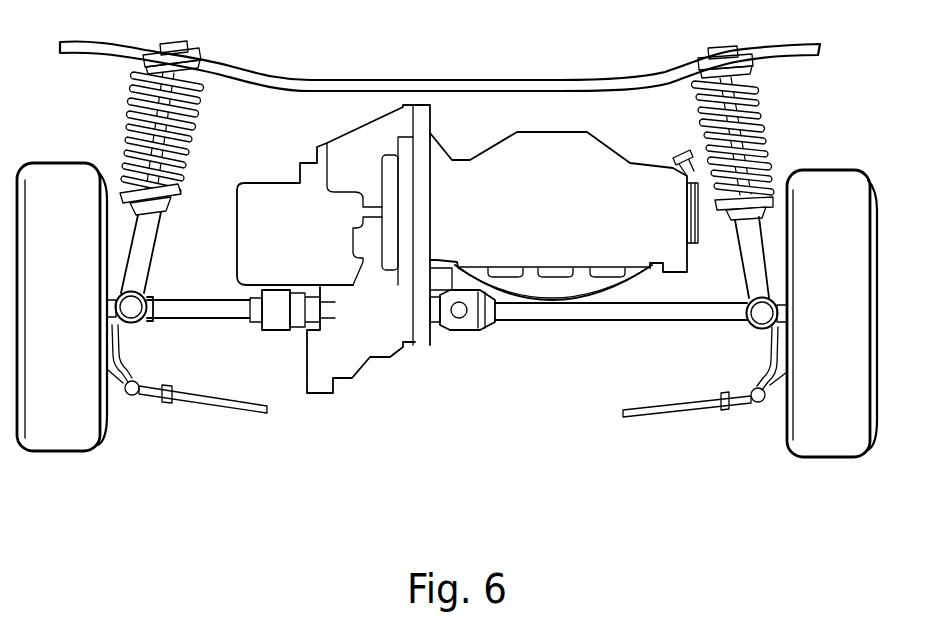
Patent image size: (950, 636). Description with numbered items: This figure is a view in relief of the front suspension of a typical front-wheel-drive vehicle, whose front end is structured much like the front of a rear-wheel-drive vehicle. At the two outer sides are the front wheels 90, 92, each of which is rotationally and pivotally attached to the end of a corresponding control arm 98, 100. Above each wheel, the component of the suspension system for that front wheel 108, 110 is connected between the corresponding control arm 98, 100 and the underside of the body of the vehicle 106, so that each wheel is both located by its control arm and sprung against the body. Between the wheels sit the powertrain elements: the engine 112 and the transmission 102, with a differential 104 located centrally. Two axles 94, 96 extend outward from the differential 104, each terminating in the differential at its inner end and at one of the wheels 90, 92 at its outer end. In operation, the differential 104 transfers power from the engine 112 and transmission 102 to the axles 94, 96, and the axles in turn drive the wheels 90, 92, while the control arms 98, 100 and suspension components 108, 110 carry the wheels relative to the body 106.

The front wheel 90 is at (78, 451).
The front wheel 92 is at (810, 458).
The axle 94 is at (193, 319).
The axle 96 is at (582, 322).
The control arm 98 is at (188, 405).
The control arm 100 is at (692, 412).
The transmission 102 is at (281, 190).
The differential 104 is at (393, 348).
The body of the vehicle 106 is at (428, 79).
The suspension system component 108 is at (203, 105).
The suspension system component 110 is at (690, 101).
The engine 112 is at (467, 160).